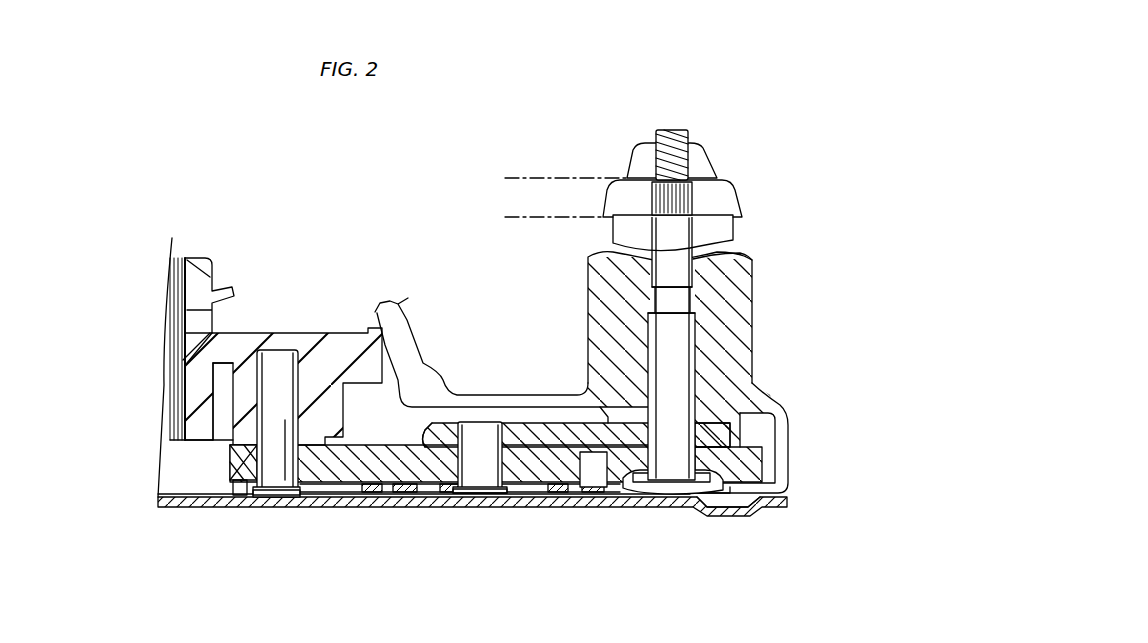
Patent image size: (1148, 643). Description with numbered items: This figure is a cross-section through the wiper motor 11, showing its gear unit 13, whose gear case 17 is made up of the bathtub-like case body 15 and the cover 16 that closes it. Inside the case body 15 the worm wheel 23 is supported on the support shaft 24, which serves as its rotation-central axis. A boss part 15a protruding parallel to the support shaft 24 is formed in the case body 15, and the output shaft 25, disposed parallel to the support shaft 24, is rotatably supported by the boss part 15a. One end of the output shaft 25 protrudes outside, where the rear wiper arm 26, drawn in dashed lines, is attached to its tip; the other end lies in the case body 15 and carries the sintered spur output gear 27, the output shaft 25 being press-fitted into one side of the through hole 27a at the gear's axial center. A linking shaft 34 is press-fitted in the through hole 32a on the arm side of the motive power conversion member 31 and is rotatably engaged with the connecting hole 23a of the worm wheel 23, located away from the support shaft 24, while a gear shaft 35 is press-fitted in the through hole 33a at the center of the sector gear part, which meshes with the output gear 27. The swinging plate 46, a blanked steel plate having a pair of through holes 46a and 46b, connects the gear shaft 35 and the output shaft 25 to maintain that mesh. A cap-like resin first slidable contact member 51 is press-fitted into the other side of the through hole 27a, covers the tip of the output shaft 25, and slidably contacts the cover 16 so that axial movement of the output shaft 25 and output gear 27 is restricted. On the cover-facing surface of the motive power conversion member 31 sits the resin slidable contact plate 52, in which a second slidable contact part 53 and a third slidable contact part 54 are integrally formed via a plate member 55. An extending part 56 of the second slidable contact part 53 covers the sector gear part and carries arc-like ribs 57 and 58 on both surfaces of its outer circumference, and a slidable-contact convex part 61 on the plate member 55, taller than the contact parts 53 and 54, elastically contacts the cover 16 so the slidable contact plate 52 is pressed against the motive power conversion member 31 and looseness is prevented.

The wiper motor 11 is at (700, 104).
The gear unit 13 is at (759, 287).
The case body 15 is at (791, 440).
The boss part 15a is at (748, 272).
The cover 16 is at (181, 508).
The gear case 17 is at (788, 407).
The worm wheel 23 is at (327, 334).
The connecting hole 23a is at (250, 405).
The support shaft 24 is at (178, 258).
The output shaft 25 is at (662, 345).
The rear wiper arm 26 is at (541, 176).
The output gear 27 is at (783, 494).
The through hole 27a is at (757, 509).
The motive power conversion member 31 is at (378, 446).
The through hole 32a is at (247, 462).
The through hole 33a is at (500, 493).
The linking shaft 34 is at (277, 363).
The gear shaft 35 is at (479, 436).
The swinging plate 46 is at (733, 432).
The through hole 46a is at (700, 428).
The through hole 46b is at (508, 440).
The first slidable contact member 51 is at (717, 496).
The slidable contact plate 52 is at (327, 504).
The second slidable contact part 53 is at (450, 493).
The third slidable contact part 54 is at (268, 497).
The plate member 55 is at (402, 493).
The extending part 56 is at (589, 493).
The arc-like rib 57 is at (558, 493).
The arc-like rib 58 is at (566, 480).
The slidable-contact convex part 61 is at (372, 493).